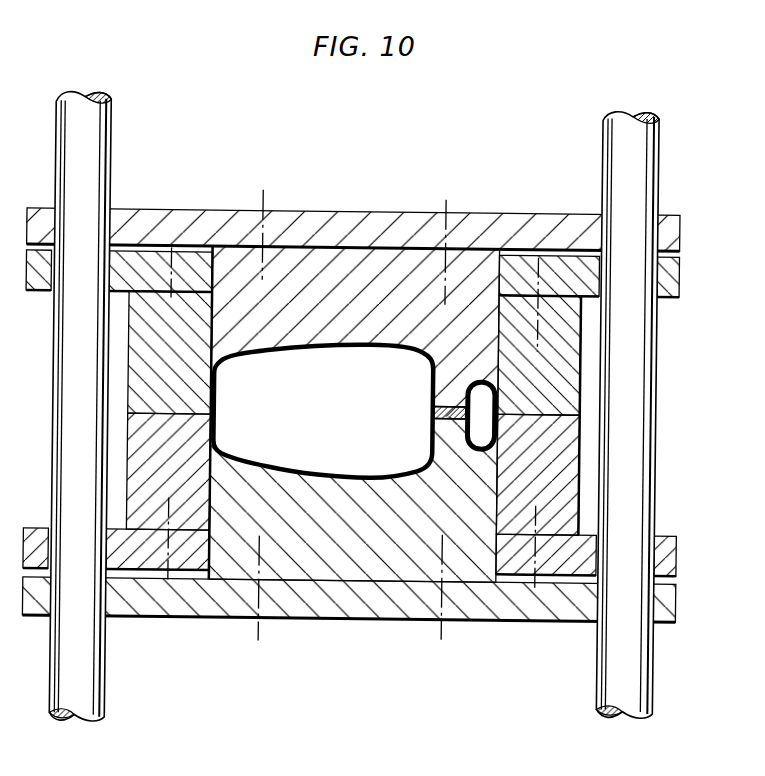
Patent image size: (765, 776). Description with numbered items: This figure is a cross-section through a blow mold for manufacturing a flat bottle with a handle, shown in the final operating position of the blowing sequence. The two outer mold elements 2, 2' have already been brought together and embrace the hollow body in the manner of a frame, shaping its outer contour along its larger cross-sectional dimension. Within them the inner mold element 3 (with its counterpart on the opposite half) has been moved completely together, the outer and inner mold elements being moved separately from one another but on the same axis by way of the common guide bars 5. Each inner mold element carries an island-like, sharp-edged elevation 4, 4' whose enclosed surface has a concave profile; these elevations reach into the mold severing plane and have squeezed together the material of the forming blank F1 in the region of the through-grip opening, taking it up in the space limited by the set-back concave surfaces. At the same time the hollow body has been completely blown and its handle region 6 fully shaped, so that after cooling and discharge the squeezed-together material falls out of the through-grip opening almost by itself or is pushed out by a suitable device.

The outer mold element 2 is at (604, 355).
The outer mold element 2' is at (605, 415).
The inner mold element 3 is at (682, 232).
The island-like sharp-edged elevation 4 is at (450, 370).
The island-like sharp-edged elevation 4' is at (450, 455).
The common guide bars 5 is at (632, 398).
The handle region 6 is at (488, 430).
The forming blank F1 is at (352, 342).